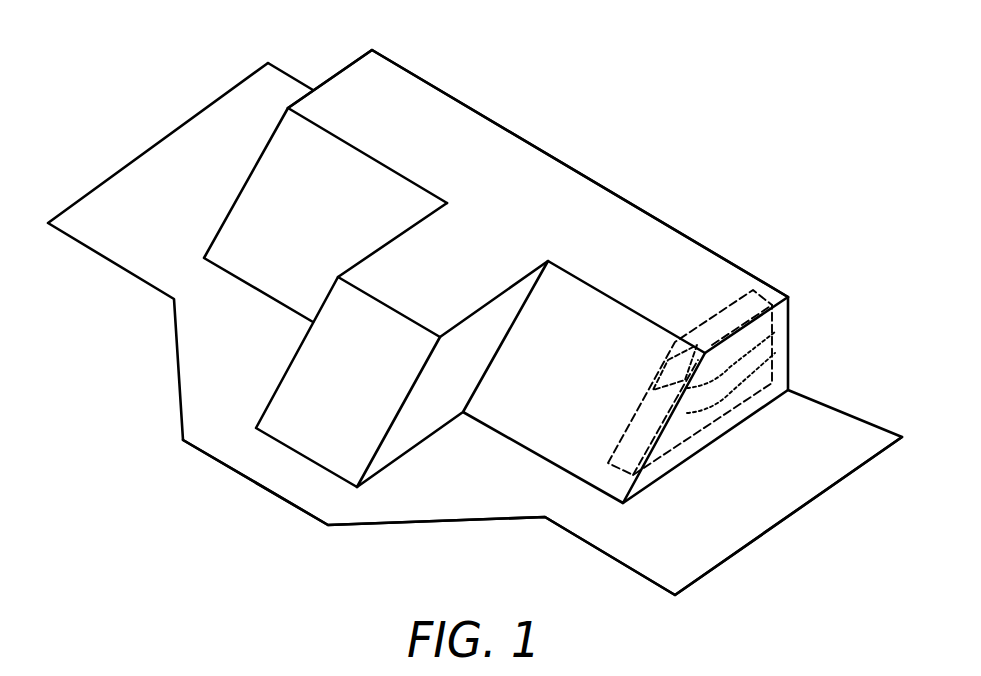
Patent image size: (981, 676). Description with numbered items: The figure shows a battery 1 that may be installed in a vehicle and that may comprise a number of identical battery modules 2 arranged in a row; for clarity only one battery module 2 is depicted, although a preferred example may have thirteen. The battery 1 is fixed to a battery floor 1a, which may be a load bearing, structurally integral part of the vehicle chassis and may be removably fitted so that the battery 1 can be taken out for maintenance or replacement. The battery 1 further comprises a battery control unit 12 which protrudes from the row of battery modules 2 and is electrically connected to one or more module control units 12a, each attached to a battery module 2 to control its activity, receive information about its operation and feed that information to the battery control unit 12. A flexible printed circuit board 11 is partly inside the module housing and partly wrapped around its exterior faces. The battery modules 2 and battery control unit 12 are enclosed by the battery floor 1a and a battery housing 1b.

The battery 1 is at (510, 107).
The battery floor 1a is at (505, 508).
The battery housing 1b is at (387, 70).
The battery module 2 is at (757, 290).
The flexible printed circuit board 11 is at (737, 380).
The battery control unit 12 is at (385, 293).
The module control unit 12a is at (653, 388).